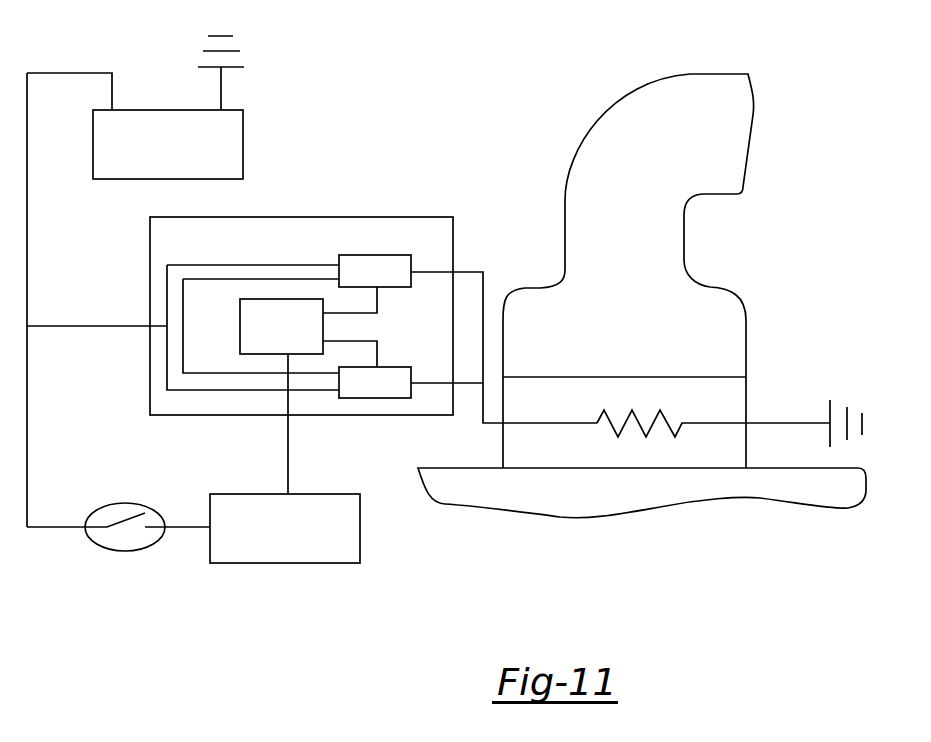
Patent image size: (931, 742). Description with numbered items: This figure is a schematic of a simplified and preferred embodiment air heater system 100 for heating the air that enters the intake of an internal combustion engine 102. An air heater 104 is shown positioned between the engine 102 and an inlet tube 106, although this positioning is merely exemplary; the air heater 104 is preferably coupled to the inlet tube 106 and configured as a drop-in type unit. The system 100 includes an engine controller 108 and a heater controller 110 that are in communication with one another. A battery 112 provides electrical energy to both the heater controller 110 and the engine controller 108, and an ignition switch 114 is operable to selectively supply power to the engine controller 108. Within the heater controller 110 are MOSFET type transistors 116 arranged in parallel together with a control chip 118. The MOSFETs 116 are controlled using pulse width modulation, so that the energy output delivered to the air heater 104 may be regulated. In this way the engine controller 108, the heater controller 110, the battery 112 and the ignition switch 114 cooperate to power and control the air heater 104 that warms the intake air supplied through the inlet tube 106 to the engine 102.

The air heater system 100 is at (488, 143).
The internal combustion engine 102 is at (648, 500).
The air heater 104 is at (733, 401).
The inlet tube 106 is at (747, 332).
The engine controller 108 is at (310, 494).
The heater controller 110 is at (302, 217).
The battery 112 is at (118, 179).
The ignition switch 114 is at (157, 511).
The MOSFET type transistors 116 is at (388, 287).
The control chip 118 is at (240, 338).